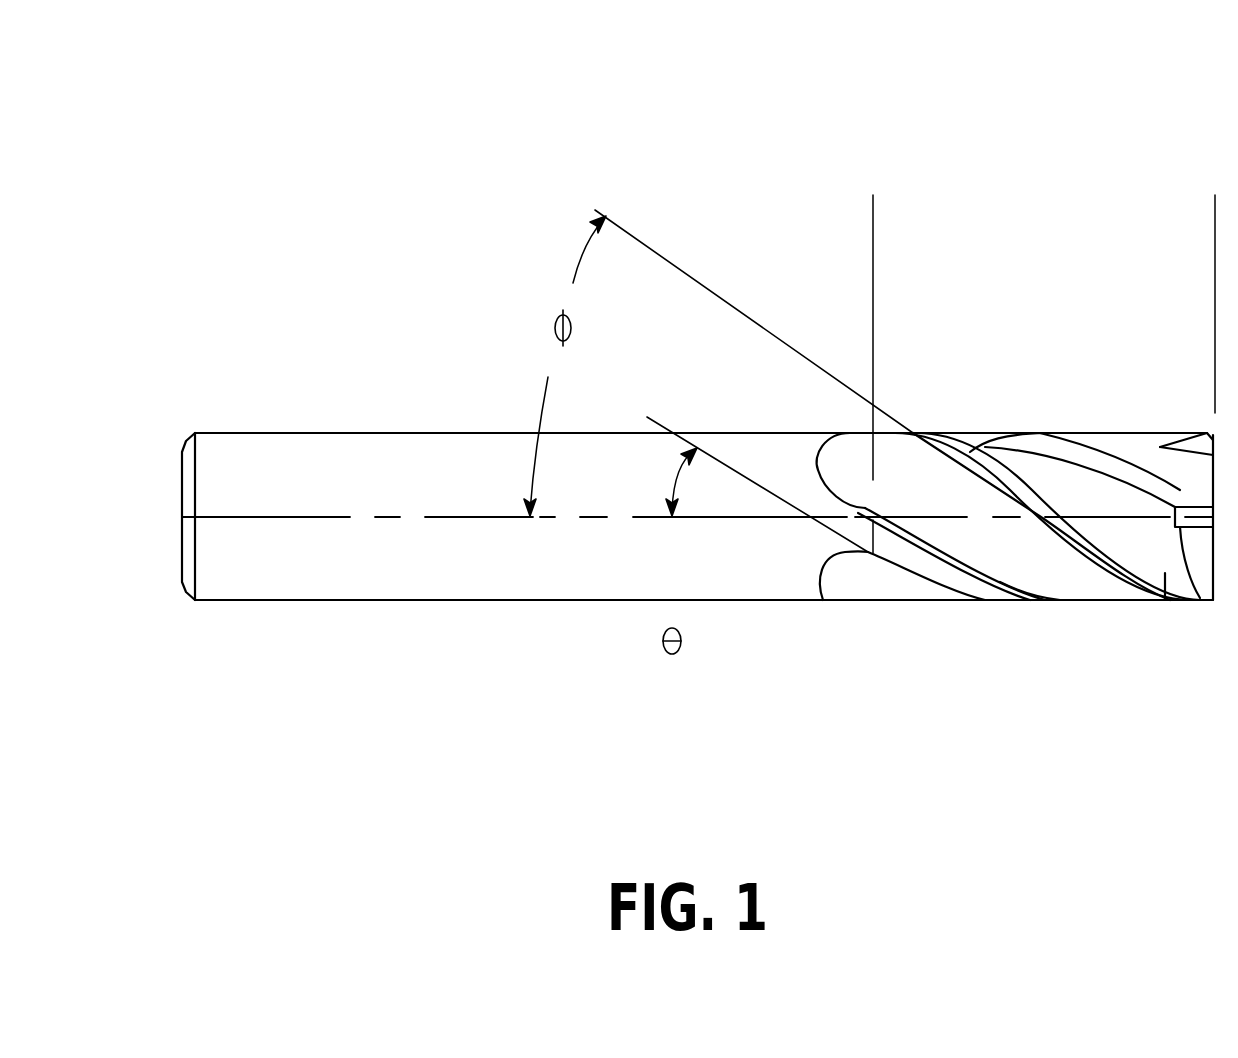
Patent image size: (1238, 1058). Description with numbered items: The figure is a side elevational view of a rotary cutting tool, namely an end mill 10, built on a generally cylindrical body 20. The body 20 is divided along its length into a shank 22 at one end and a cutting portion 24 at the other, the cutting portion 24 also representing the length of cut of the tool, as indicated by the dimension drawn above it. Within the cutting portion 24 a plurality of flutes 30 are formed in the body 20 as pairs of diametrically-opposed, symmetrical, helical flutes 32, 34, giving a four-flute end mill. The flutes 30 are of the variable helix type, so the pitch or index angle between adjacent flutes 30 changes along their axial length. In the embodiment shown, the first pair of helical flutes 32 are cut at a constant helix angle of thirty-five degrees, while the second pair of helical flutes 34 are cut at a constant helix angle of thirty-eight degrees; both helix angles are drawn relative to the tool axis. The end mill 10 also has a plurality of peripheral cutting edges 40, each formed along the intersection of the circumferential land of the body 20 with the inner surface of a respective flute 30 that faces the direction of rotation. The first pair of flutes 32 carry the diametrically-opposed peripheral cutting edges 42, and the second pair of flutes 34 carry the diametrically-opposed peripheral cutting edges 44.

The rotary cutting tool or endmill 10 is at (675, 416).
The cylindrical body 20 is at (168, 484).
The shank 22 is at (298, 605).
The cutting portion 24 is at (1215, 223).
The flutes 30 is at (1036, 563).
The first pair of diametrically-opposed, symmetrical, helical flutes 32 is at (890, 583).
The second pair of diametrically-opposed, symmetrical, helical flutes 34 is at (1107, 587).
The peripheral cutting edges 40 is at (985, 478).
The peripheral cutting edges of the first pair of flutes 42 is at (970, 597).
The peripheral cutting edges of the second pair of flutes 44 is at (1043, 482).